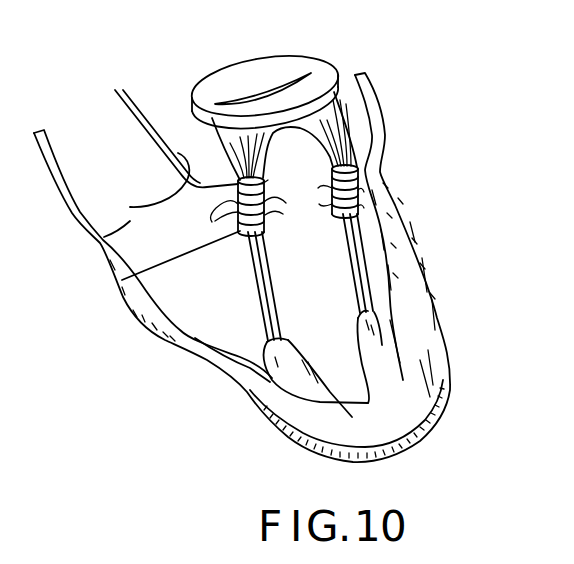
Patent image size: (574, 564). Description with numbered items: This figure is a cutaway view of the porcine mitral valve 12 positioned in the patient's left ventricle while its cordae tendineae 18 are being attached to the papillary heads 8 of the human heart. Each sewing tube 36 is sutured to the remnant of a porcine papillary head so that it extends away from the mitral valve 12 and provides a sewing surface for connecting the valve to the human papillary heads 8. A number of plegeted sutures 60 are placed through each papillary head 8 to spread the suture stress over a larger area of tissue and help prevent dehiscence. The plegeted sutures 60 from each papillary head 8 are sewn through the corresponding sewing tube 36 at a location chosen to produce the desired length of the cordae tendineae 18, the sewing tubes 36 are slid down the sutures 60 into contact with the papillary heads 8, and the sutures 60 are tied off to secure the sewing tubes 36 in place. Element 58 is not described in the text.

The papillary head 8 is at (380, 336).
The porcine mitral valve 12 is at (293, 70).
The cordae tendineae 18 is at (310, 141).
The sewing tube 36 is at (364, 190).
The strain relief 58 is at (270, 178).
The plegeted sutures 60 is at (355, 258).